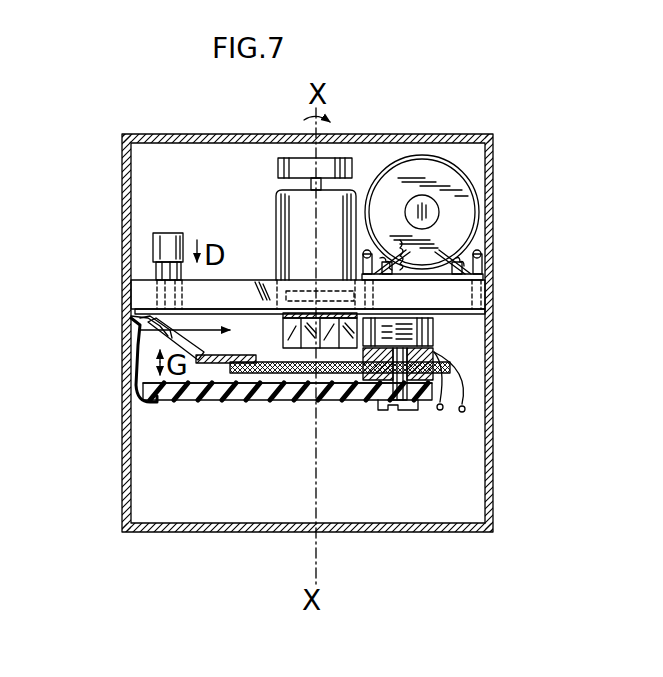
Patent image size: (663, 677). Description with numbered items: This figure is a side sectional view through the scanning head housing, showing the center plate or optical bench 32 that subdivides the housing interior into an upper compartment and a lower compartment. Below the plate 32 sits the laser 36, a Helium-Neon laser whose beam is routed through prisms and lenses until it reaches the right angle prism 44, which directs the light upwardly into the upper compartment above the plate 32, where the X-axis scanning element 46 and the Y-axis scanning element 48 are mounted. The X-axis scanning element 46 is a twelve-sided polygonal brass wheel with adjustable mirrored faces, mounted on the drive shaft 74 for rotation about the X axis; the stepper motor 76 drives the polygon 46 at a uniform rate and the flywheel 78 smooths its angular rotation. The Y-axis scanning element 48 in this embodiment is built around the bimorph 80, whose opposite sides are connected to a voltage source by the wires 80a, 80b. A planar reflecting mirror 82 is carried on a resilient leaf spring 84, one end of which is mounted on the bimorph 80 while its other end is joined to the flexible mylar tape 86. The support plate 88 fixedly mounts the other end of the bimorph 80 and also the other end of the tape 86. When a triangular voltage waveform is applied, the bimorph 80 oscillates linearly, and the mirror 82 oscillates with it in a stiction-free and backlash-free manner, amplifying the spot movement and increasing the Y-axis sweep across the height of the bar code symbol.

The center plate or optical bench 32 is at (480, 298).
The laser 36 is at (452, 183).
The right angle prism 44 is at (170, 246).
The X-axis scanning element 46 is at (287, 338).
The Y-axis scanning element 48 is at (292, 424).
The drive shaft 74 is at (310, 186).
The stepper motor 76 is at (284, 254).
The flywheel 78 is at (300, 165).
The bimorph 80 is at (352, 400).
The wire 80a is at (444, 412).
The wire 80b is at (462, 395).
The planar reflecting mirror 82 is at (162, 322).
The resilient leaf spring 84 is at (136, 322).
The flexible mylar tape 86 is at (130, 372).
The support plate 88 is at (212, 402).